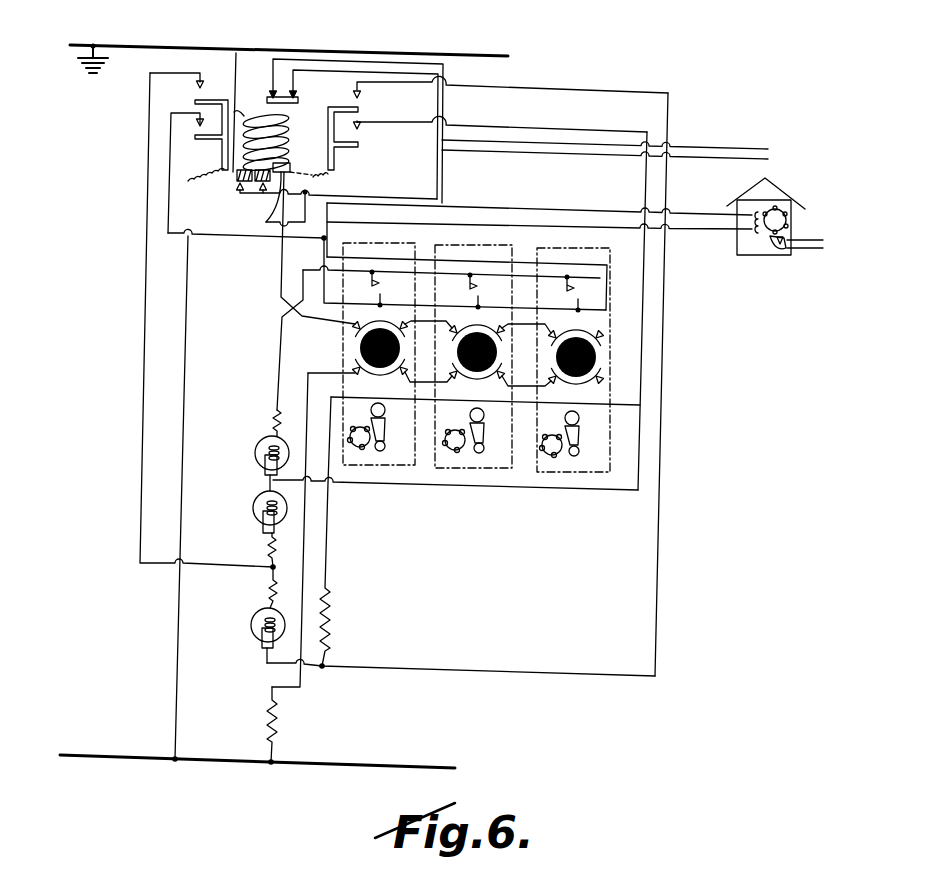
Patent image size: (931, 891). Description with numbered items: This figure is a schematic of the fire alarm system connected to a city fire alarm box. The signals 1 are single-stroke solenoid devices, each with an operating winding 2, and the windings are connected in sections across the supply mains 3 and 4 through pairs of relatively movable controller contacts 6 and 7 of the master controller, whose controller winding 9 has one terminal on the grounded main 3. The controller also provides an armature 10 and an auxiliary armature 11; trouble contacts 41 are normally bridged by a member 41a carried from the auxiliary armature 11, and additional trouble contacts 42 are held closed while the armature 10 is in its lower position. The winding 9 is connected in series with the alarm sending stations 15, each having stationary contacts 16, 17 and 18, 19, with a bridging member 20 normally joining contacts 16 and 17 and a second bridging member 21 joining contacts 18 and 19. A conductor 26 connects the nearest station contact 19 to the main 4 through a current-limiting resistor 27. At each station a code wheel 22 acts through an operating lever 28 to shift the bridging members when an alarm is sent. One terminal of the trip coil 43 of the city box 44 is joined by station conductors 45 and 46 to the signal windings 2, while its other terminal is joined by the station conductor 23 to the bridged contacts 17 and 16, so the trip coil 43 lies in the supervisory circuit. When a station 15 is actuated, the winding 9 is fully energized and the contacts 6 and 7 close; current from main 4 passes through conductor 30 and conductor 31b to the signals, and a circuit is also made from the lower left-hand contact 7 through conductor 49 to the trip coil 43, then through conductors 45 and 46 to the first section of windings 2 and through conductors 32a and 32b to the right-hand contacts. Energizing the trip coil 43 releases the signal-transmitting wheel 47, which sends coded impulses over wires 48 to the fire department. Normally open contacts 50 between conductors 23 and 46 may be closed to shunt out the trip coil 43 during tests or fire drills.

The signal 1 is at (257, 500).
The operating winding 2 is at (260, 447).
The supply main 3 is at (277, 53).
The supply main 4 is at (233, 771).
The controller contact 6 is at (222, 104).
The controller contact 7 is at (204, 87).
The controller winding 9 is at (246, 156).
The armature 10 is at (264, 190).
The auxiliary armature 11 is at (272, 224).
The alarm sending station 15 is at (607, 265).
The stationary contact 16 is at (355, 327).
The stationary contact 17 is at (403, 325).
The stationary contact 18 is at (403, 380).
The stationary contact 19 is at (355, 373).
The bridging member 20 is at (600, 344).
The bridging member 21 is at (580, 385).
The code wheel 22 is at (553, 450).
The station conductor 23 is at (606, 309).
The conductor 26 is at (304, 549).
The current-limiting resistor 27 is at (331, 610).
The operating lever 28 is at (578, 443).
The conductor 30 is at (176, 657).
The conductor 31b is at (141, 347).
The conductor 32a is at (473, 489).
The conductor 32b is at (433, 669).
The trouble contact 41 is at (299, 98).
The bridging member 41a is at (272, 95).
The trouble contact 42 is at (238, 187).
The trip coil 43 is at (760, 238).
The city box 44 is at (779, 256).
The station conductor 45 is at (460, 258).
The station conductor 46 is at (488, 272).
The signal-transmitting wheel 47 is at (785, 224).
The wire 48 is at (813, 249).
The conductor 49 is at (228, 236).
The movable contact 50 is at (382, 303).